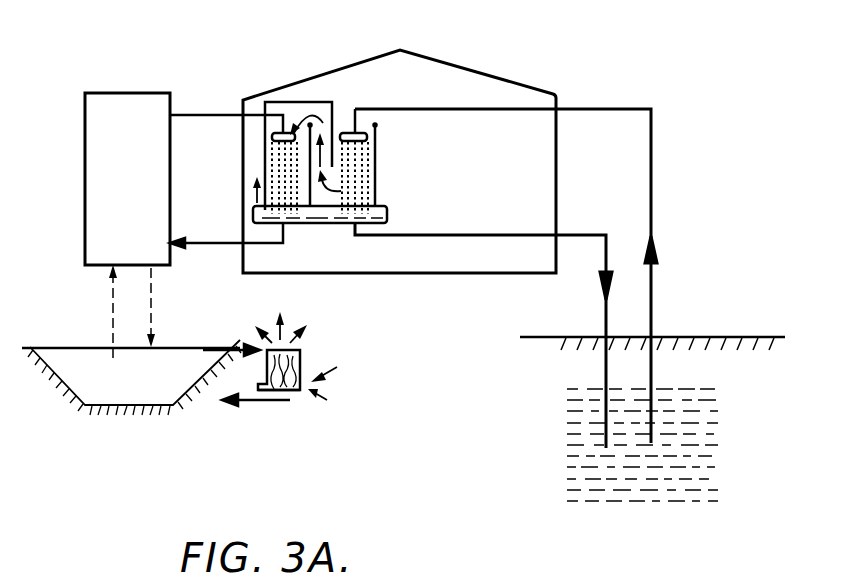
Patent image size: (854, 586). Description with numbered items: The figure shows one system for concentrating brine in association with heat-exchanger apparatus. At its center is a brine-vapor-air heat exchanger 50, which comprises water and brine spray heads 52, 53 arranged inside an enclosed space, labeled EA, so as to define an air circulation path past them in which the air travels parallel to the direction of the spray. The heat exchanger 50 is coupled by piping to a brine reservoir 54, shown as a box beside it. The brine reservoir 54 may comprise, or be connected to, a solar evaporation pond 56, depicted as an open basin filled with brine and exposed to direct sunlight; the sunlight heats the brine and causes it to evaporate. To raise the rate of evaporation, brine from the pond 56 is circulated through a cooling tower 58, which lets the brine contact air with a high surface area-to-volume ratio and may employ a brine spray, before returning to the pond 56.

The brine-vapor-air heat exchanger 50 is at (288, 98).
The water spray head 52 is at (277, 128).
The brine spray head 53 is at (366, 157).
The brine reservoir 54 is at (127, 225).
The solar evaporation pond 56 is at (177, 363).
The cooling tower 58 is at (292, 350).
The enclosed area EA is at (344, 100).